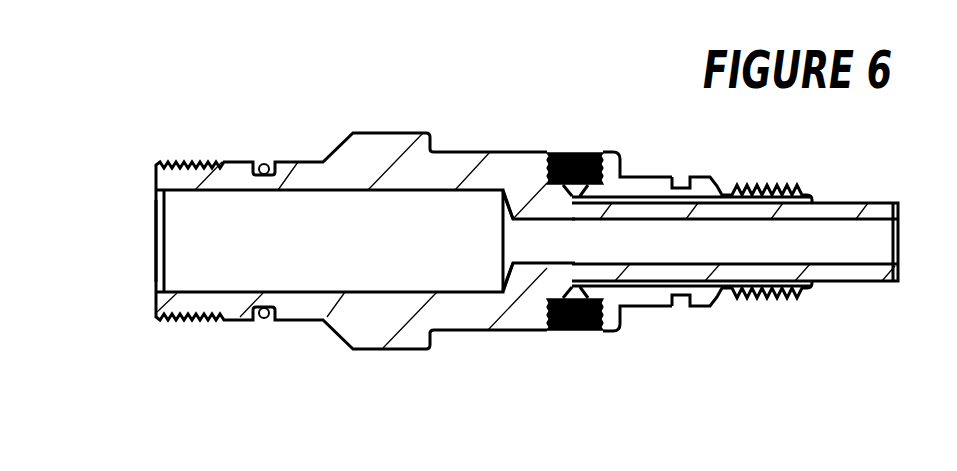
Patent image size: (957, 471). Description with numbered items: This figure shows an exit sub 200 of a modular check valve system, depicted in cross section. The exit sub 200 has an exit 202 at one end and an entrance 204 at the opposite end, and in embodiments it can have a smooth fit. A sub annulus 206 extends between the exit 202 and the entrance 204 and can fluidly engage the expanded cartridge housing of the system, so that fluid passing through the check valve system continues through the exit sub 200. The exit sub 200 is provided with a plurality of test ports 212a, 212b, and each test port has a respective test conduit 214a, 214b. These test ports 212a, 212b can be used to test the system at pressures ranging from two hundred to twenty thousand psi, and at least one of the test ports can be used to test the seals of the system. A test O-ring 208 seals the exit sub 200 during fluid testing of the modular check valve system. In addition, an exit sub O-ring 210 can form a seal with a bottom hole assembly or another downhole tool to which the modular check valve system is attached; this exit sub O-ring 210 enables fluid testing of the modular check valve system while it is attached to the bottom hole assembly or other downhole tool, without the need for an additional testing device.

The exit sub 200 is at (395, 133).
The exit 202 is at (895, 241).
The entrance 204 is at (160, 240).
The sub annulus 206 is at (492, 200).
The test O-ring 208 is at (262, 161).
The exit sub O-ring 210 is at (682, 175).
The test port 212a is at (575, 161).
The test port 212b is at (575, 325).
The test conduit 214a is at (648, 185).
The test conduit 214b is at (648, 290).